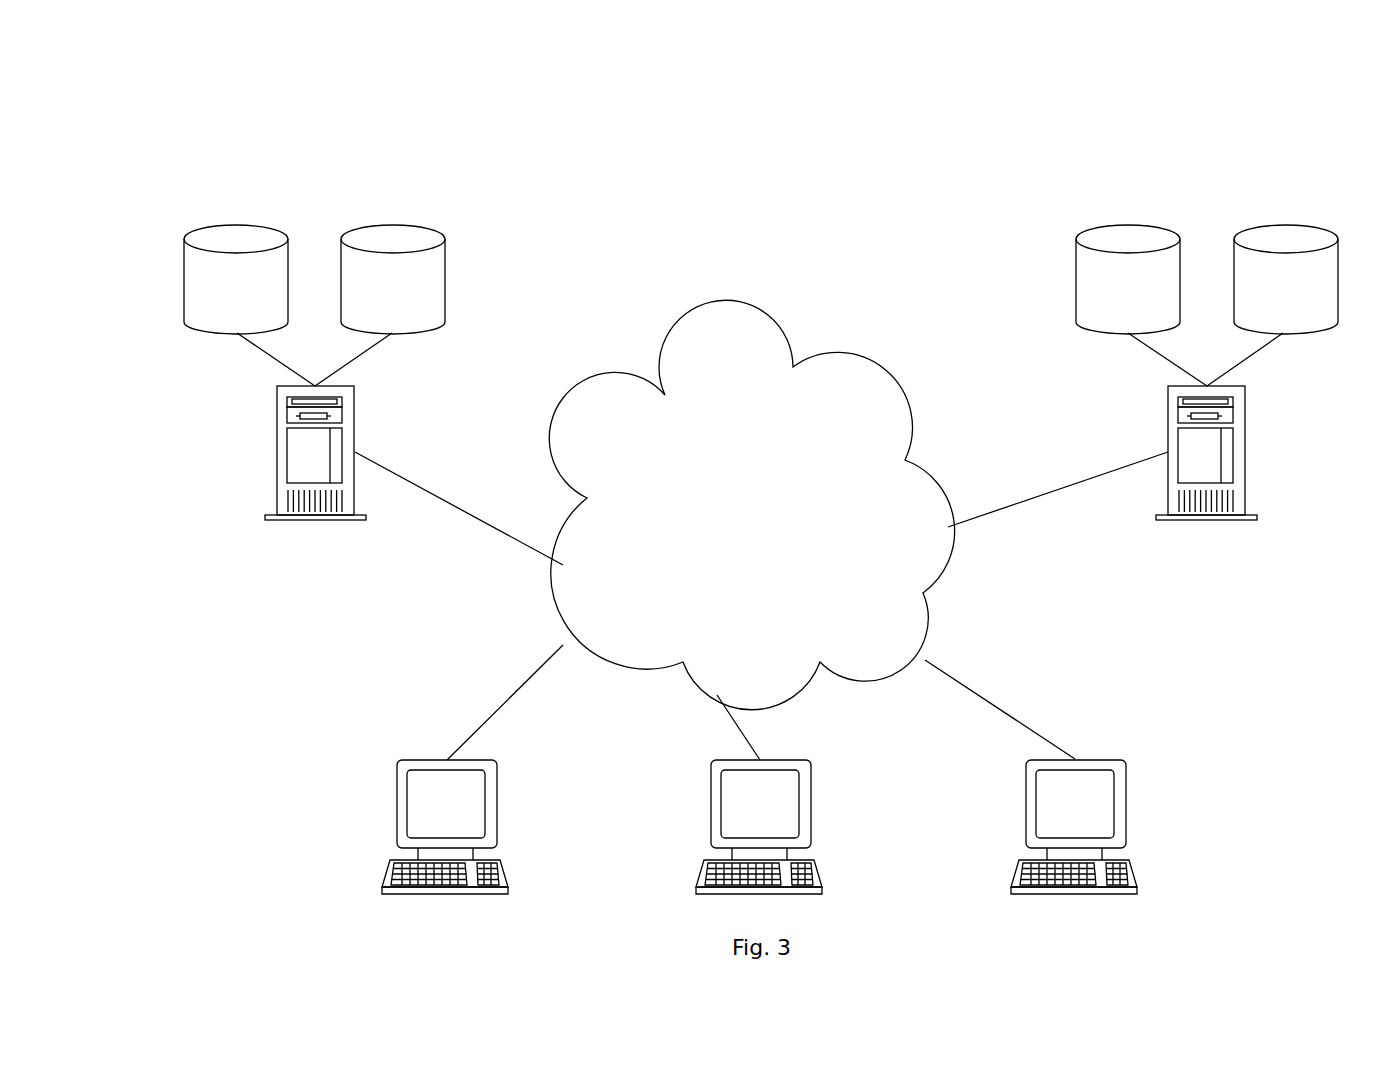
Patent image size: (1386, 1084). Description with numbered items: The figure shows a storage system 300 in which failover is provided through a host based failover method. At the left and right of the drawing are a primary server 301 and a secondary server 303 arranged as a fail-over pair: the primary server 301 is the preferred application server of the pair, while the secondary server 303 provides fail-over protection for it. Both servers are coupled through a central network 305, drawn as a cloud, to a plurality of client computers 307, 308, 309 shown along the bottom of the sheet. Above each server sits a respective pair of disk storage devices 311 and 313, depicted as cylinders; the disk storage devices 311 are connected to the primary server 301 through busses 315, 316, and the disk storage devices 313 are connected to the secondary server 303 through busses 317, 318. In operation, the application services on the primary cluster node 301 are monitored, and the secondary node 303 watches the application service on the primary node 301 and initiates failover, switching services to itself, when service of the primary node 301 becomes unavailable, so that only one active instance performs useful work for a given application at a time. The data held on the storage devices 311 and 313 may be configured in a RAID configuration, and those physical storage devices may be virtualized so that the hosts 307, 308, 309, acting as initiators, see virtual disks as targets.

The storage system 300 is at (205, 115).
The primary server 301 is at (342, 520).
The secondary server 303 is at (1235, 520).
The network 305 is at (898, 384).
The client computer 307 is at (498, 798).
The client computer 308 is at (813, 798).
The client computer 309 is at (1128, 785).
The disk storage devices 311 is at (393, 200).
The disk storage devices 313 is at (1222, 212).
The bus 315 is at (262, 347).
The bus 316 is at (382, 347).
The bus 317 is at (1152, 347).
The bus 318 is at (1260, 347).